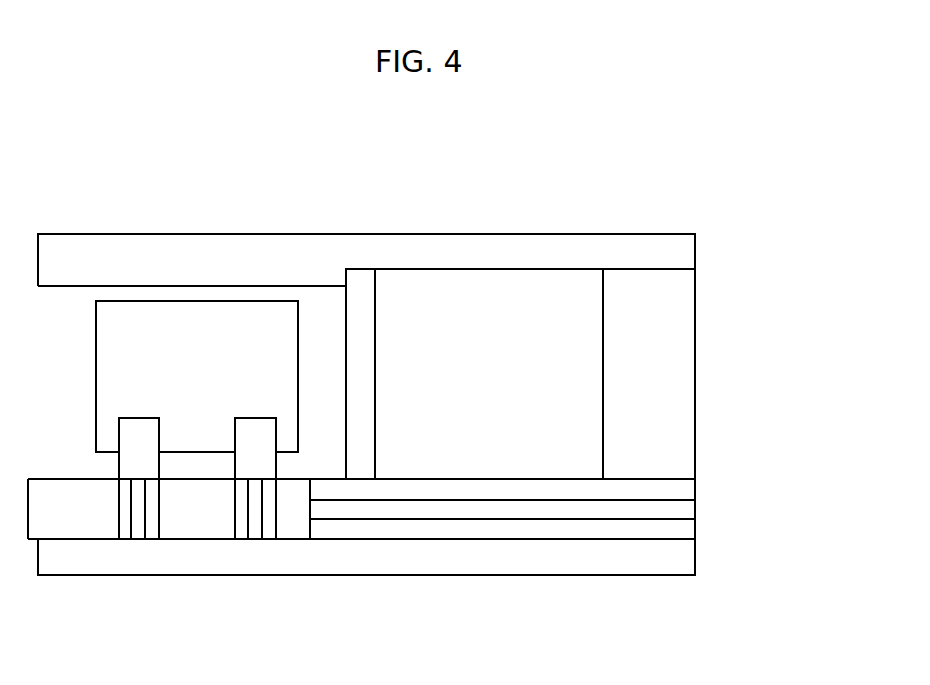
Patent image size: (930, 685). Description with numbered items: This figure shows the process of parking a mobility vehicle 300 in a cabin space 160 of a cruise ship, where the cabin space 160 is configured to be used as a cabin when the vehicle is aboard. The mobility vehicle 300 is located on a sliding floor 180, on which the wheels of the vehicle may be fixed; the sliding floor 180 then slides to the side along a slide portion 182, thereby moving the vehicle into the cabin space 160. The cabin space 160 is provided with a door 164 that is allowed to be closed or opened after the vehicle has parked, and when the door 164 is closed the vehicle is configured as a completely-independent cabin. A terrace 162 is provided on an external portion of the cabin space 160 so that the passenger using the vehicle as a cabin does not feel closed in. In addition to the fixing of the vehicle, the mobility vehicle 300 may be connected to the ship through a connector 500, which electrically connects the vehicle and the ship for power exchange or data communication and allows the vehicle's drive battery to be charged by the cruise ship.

The mobility vehicle 300 is at (196, 337).
The cabin space 160 is at (483, 300).
The door 164 is at (370, 348).
The terrace 162 is at (682, 377).
The sliding floor 180 is at (202, 508).
The slide portion 182 is at (581, 508).
The connector 500 is at (257, 507).